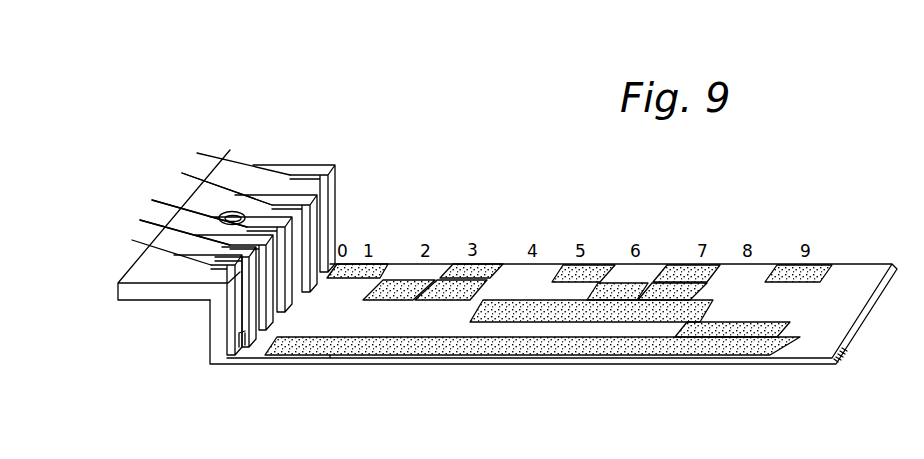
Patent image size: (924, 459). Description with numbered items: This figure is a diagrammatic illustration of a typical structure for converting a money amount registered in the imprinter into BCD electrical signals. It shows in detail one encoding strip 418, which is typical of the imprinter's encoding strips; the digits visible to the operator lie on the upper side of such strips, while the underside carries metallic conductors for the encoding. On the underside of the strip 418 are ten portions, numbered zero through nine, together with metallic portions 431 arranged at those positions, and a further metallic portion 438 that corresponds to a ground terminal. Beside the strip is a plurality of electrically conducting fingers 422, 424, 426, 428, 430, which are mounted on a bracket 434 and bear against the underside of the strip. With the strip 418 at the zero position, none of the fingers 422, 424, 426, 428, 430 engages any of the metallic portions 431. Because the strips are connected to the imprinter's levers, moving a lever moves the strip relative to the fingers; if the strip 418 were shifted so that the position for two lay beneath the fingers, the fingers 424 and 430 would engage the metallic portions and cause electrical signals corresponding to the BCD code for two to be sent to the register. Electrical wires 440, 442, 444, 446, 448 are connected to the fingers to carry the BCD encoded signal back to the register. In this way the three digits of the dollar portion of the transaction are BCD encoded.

The strip 418 is at (807, 343).
The electrically conducting finger 422 is at (322, 220).
The electrically conducting finger 424 is at (307, 247).
The electrically conducting finger 426 is at (280, 293).
The electrically conducting finger 428 is at (262, 316).
The electrically conducting finger 430 is at (240, 335).
The metallic portions 431 is at (793, 266).
The bracket 434 is at (328, 199).
The metallic portion 438 is at (548, 348).
The electrical wire 440 is at (222, 157).
The electrical wire 442 is at (186, 173).
The electrical wire 444 is at (170, 204).
The electrical wire 446 is at (150, 222).
The electrical wire 448 is at (132, 240).